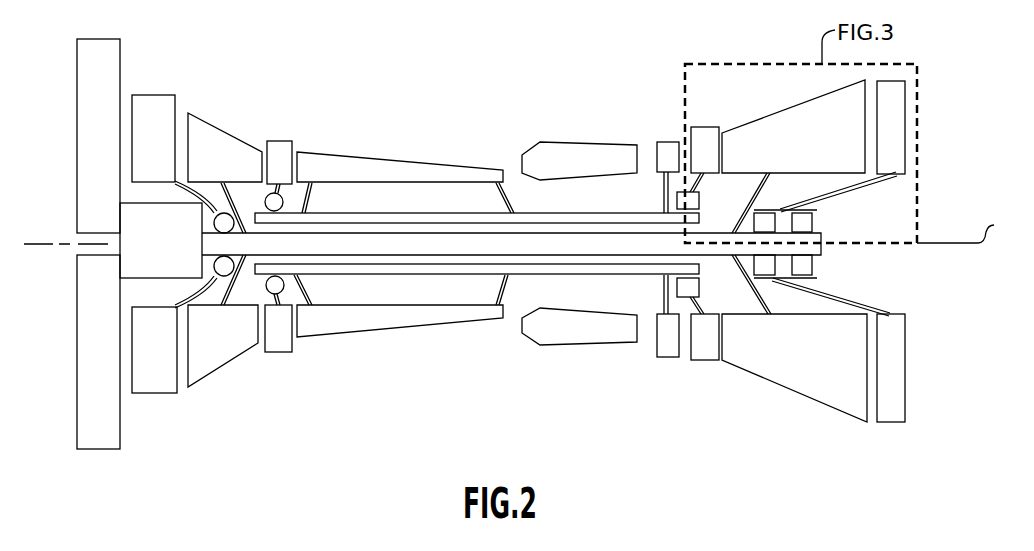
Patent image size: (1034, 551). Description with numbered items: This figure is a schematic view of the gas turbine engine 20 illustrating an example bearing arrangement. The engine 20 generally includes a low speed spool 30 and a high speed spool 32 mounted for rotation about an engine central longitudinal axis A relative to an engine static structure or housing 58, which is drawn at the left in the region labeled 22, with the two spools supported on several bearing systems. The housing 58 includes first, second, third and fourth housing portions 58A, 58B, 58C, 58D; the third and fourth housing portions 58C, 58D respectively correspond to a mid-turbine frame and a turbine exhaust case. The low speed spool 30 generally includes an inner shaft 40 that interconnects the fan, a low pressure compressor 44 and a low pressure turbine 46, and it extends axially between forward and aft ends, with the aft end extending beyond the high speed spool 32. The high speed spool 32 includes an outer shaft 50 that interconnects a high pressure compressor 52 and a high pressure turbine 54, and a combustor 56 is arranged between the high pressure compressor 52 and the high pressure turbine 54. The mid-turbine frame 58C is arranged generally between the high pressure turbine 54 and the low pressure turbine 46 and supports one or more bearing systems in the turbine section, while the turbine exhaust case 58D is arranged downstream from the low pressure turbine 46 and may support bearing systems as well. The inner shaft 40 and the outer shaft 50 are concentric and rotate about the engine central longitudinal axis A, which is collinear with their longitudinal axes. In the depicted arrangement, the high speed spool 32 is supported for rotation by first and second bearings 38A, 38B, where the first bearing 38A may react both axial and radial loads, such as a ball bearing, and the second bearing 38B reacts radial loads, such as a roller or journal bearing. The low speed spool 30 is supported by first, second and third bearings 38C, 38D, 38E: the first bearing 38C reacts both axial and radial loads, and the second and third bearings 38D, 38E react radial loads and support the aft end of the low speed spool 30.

The gas turbine engine 20 is at (499, 86).
The fan section 22 is at (88, 366).
The low speed spool 30 is at (530, 228).
The high speed spool 32 is at (550, 269).
The first bearing 38A is at (283, 200).
The second bearing 38B is at (692, 202).
The first bearing 38C is at (226, 220).
The second bearing 38D is at (765, 222).
The third bearing 38E is at (798, 222).
The inner shaft 40 is at (527, 270).
The low pressure compressor 44 is at (224, 369).
The low pressure turbine 46 is at (774, 391).
The outer shaft 50 is at (288, 218).
The high pressure compressor 52 is at (356, 337).
The high pressure turbine 54 is at (667, 361).
The combustor 56 is at (578, 345).
The engine static structure 58 is at (192, 85).
The first housing portion 58A is at (152, 105).
The second housing portion 58B is at (279, 148).
The mid-turbine frame 58C is at (707, 135).
The turbine exhaust case 58D is at (893, 92).
The engine central longitudinal axis A is at (517, 229).